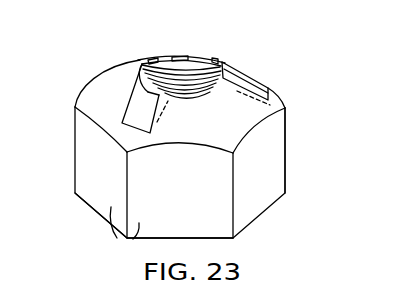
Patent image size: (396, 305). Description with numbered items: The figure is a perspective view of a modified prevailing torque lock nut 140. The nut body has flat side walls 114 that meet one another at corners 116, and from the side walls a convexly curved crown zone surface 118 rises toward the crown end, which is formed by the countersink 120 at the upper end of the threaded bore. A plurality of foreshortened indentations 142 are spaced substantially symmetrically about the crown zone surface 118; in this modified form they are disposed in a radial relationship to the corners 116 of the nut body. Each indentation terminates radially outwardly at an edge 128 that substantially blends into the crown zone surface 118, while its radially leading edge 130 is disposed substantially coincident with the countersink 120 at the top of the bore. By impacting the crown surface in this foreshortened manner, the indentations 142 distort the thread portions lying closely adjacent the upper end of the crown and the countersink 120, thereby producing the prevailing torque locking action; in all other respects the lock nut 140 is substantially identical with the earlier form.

The side walls 114 is at (133, 240).
The corners 116 is at (233, 178).
The crown zone surface 118 is at (96, 81).
The countersink 120 is at (190, 57).
The edges 128 is at (135, 127).
The radially leading edge 130 is at (156, 57).
The lock nut 140 is at (318, 134).
The indentations 142 is at (233, 85).